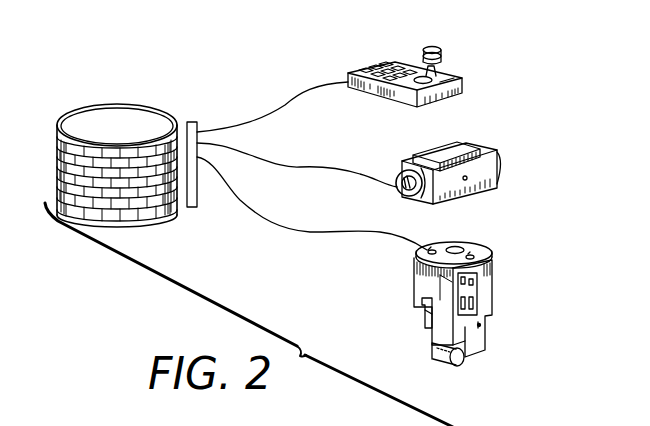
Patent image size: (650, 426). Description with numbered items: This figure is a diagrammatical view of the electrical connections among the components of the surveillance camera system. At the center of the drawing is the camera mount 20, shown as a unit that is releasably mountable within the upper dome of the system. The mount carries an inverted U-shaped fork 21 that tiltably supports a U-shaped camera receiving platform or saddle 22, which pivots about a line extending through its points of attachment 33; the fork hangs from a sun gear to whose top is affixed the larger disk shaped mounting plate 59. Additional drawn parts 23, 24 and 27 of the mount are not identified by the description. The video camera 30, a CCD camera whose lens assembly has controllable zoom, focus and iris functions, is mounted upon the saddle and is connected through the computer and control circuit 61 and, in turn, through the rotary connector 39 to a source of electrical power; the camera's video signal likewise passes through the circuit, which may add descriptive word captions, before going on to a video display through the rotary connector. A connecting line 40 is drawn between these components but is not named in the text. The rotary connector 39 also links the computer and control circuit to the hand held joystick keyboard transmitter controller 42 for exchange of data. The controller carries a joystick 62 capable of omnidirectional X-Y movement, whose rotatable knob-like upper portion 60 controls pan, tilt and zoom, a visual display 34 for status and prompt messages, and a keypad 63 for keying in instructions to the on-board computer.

The camera mount 20 is at (477, 300).
The inverted U-shaped fork 21 is at (412, 280).
The camera receiving platform or saddle 22 is at (425, 326).
The mounting member 23 is at (428, 322).
The connector panel 24 is at (484, 283).
The roller / cylinder 27 is at (443, 362).
The video camera 30 is at (475, 146).
The points of attachment 33 is at (480, 325).
The visual display 34 is at (433, 61).
The rotary connector 39 is at (182, 115).
The camera cable 40 is at (305, 164).
The hand held joystick keyboard transmitter controller 42 is at (466, 84).
The mounting plate 59 is at (474, 250).
The knob-like upper portion 60 is at (424, 52).
The computer and control circuit 61 is at (475, 295).
The joystick 62 is at (438, 60).
The keypad 63 is at (378, 66).